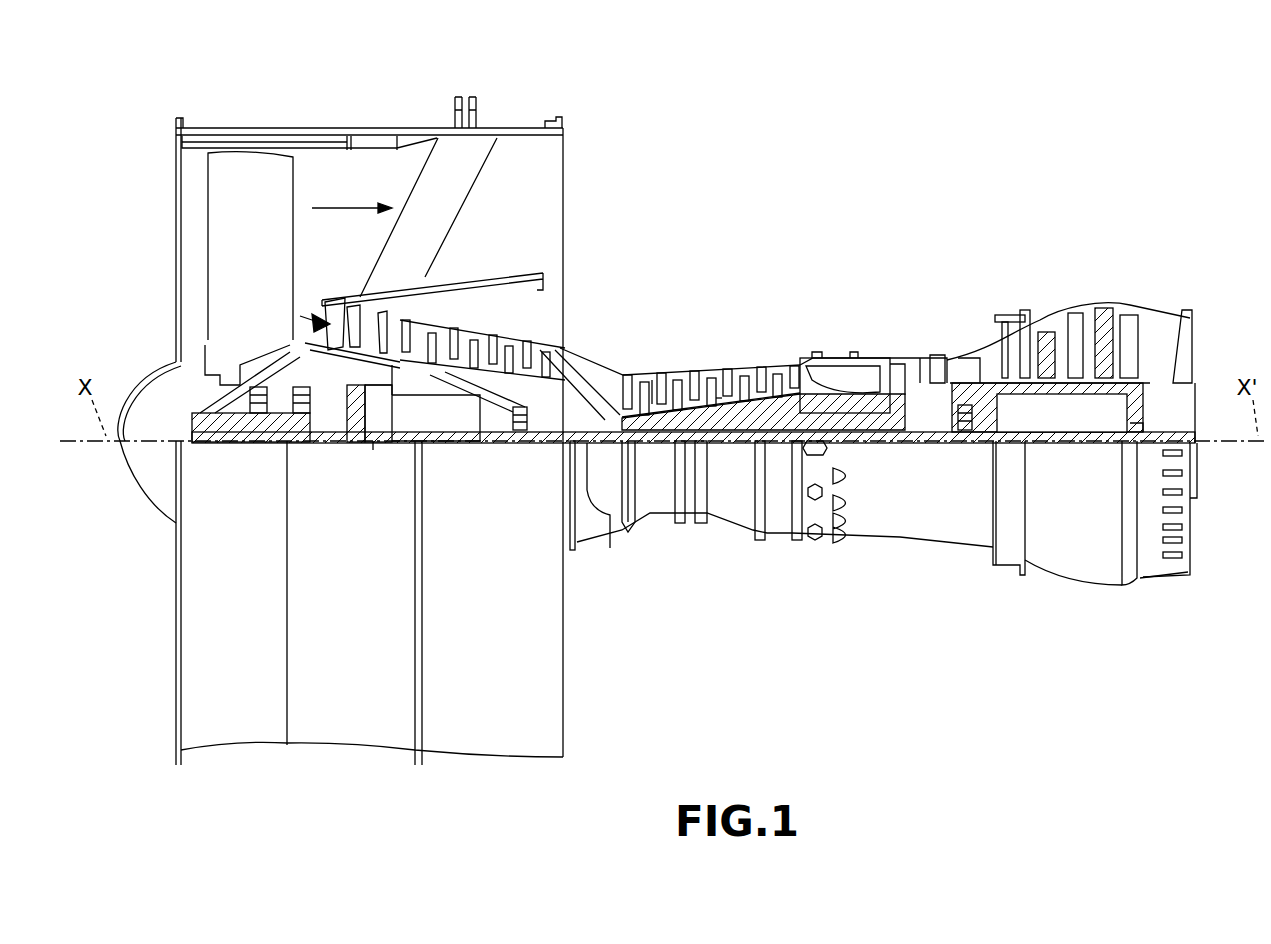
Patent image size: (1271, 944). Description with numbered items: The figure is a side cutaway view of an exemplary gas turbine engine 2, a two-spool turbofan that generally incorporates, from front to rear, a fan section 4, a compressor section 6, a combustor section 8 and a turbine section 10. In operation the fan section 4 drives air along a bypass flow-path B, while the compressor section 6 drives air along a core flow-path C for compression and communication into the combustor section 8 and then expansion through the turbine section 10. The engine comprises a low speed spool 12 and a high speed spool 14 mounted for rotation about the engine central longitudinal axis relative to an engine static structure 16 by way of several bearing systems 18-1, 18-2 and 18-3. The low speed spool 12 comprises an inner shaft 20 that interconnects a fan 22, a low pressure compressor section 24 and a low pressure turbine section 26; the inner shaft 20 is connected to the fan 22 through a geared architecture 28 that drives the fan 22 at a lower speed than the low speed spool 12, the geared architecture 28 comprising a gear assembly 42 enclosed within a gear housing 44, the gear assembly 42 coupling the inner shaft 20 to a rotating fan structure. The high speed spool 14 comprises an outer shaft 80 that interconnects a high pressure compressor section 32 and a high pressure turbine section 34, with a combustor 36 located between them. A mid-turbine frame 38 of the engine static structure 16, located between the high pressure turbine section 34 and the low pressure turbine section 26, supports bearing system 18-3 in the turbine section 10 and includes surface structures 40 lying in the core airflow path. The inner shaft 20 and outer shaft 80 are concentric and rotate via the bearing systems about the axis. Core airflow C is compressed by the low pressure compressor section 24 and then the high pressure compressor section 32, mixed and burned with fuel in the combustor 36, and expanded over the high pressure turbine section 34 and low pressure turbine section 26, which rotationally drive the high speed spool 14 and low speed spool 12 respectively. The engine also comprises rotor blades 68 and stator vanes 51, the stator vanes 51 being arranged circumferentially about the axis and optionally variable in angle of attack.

The gas turbine engine 2 is at (905, 152).
The fan section 4 is at (415, 105).
The compressor section 6 is at (425, 240).
The combustor section 8 is at (908, 240).
The turbine section 10 is at (1128, 240).
The low speed spool 12 is at (740, 462).
The high speed spool 14 is at (775, 405).
The engine static structure 16 is at (348, 745).
The bearing system 18-1 is at (260, 414).
The bearing system 18-2 is at (520, 431).
The bearing system 18-3 is at (965, 431).
The inner shaft 20 is at (610, 520).
The fan 22 is at (261, 254).
The low pressure compressor section 24 is at (500, 340).
The low pressure turbine section 26 is at (1042, 322).
The geared architecture 28 is at (380, 470).
The high pressure compressor section 32 is at (722, 398).
The high pressure turbine section 34 is at (920, 360).
The combustor 36 is at (855, 375).
The mid-turbine frame 38 is at (965, 346).
The surface structures 40 is at (978, 360).
The gear assembly 42 is at (400, 432).
The gear housing 44 is at (388, 392).
The stator vane 51 is at (652, 380).
The rotor blade 68 is at (932, 355).
The outer shaft 80 is at (860, 443).
The bypass flow-path B is at (338, 213).
The core flow-path C is at (300, 316).